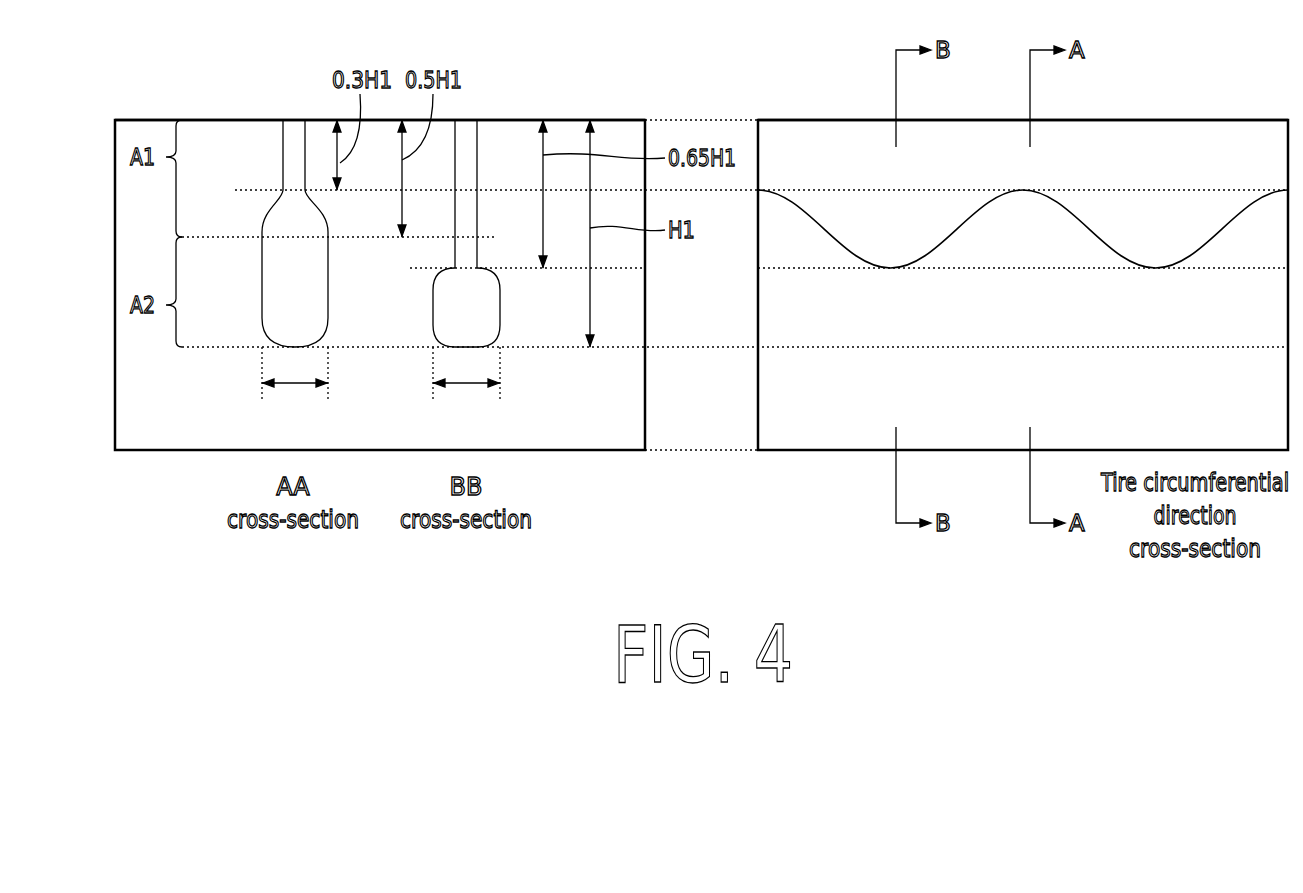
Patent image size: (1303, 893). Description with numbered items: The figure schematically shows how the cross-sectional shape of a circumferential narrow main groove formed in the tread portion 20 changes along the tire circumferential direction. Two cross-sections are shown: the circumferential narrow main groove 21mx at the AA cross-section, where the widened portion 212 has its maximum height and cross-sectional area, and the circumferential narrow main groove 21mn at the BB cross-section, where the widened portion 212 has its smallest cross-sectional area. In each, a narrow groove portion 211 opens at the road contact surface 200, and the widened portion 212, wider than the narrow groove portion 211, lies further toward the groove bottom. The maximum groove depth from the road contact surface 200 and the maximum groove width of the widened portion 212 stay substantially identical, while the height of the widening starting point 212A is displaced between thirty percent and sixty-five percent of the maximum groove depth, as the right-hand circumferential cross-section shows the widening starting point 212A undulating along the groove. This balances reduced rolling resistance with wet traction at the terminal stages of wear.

The tread portion 20 is at (624, 90).
The road contact surface 200 is at (571, 118).
The circumferential narrow main groove having maximum height of widened portion 21mx is at (308, 90).
The circumferential narrow main groove having smallest cross-sectional area of widen 21mn is at (478, 90).
The narrow groove portion 211 is at (295, 138).
The widened portion 212 is at (320, 305).
The widening starting point 212A is at (283, 190).